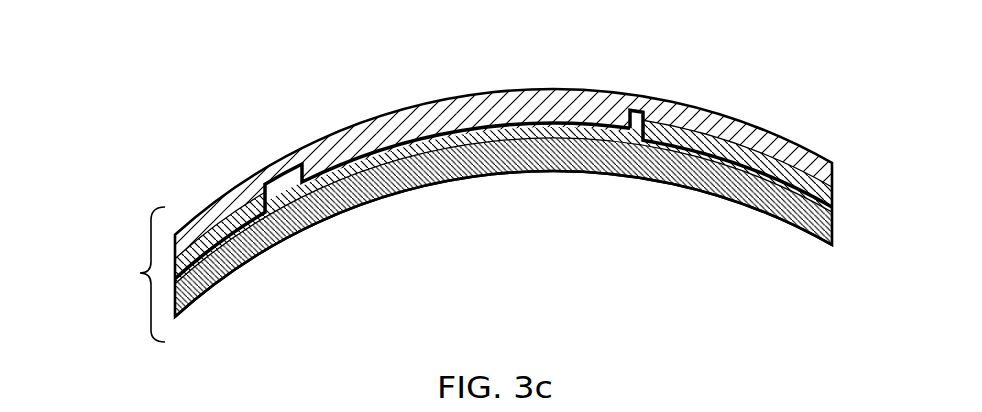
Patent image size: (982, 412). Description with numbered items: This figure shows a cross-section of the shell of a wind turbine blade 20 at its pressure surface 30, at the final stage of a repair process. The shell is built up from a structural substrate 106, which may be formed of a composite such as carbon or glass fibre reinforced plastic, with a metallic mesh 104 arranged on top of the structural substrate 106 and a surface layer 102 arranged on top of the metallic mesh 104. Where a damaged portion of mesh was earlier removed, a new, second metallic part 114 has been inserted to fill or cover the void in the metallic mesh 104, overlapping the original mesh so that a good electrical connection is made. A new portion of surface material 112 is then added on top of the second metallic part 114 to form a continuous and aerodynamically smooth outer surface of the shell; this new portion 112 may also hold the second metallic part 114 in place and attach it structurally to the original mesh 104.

The wind turbine blade 20 is at (126, 261).
The pressure surface 30 is at (140, 275).
The surface layer 102 is at (835, 176).
The metallic mesh 104 is at (835, 203).
The structural substrate 106 is at (835, 226).
The new portion of surface material 112 is at (572, 100).
The second metallic part 114 is at (648, 107).